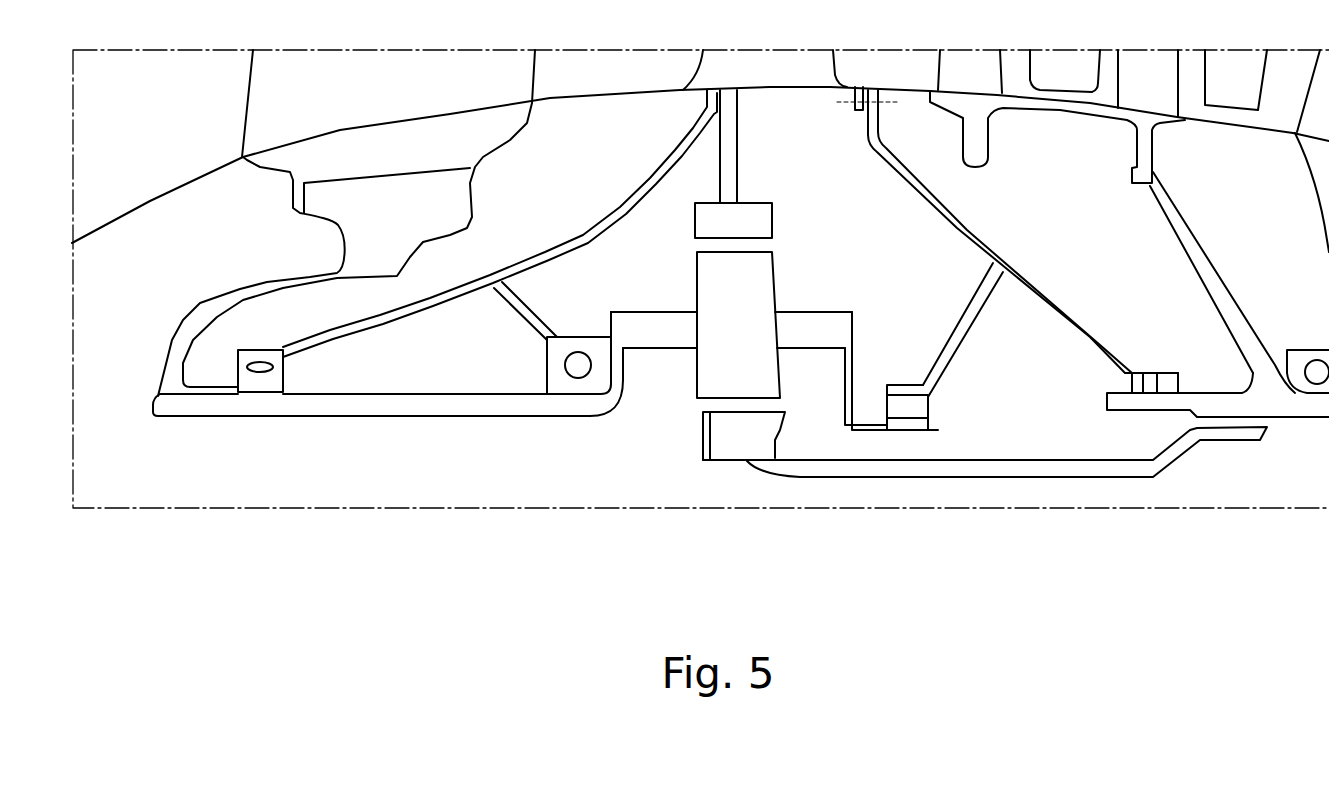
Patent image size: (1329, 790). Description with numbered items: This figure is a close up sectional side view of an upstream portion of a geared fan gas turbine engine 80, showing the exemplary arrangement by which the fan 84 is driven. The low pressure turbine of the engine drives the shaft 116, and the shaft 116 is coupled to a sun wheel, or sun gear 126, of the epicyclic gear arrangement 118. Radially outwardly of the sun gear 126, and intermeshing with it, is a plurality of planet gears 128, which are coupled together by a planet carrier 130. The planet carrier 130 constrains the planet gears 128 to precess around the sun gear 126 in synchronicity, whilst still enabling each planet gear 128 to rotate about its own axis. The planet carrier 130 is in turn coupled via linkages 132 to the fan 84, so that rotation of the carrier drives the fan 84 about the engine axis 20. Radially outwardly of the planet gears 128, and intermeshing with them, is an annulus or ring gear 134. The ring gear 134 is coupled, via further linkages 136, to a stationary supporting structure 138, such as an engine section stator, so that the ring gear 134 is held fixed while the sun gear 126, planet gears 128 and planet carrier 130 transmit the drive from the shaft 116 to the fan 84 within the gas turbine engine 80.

The engine axis 20 is at (293, 510).
The geared fan gas turbine engine 80 is at (1277, 571).
The fan 84 is at (373, 96).
The shaft 116 is at (1040, 467).
The epicyclic gear arrangement 118 is at (653, 398).
The sun gear 126 is at (732, 443).
The planet gears 128 is at (715, 365).
The planet carrier 130 is at (850, 393).
The linkages 132 is at (637, 368).
The ring gear 134 is at (707, 220).
The linkages 136 is at (745, 150).
The stationary supporting structure 138 is at (765, 70).